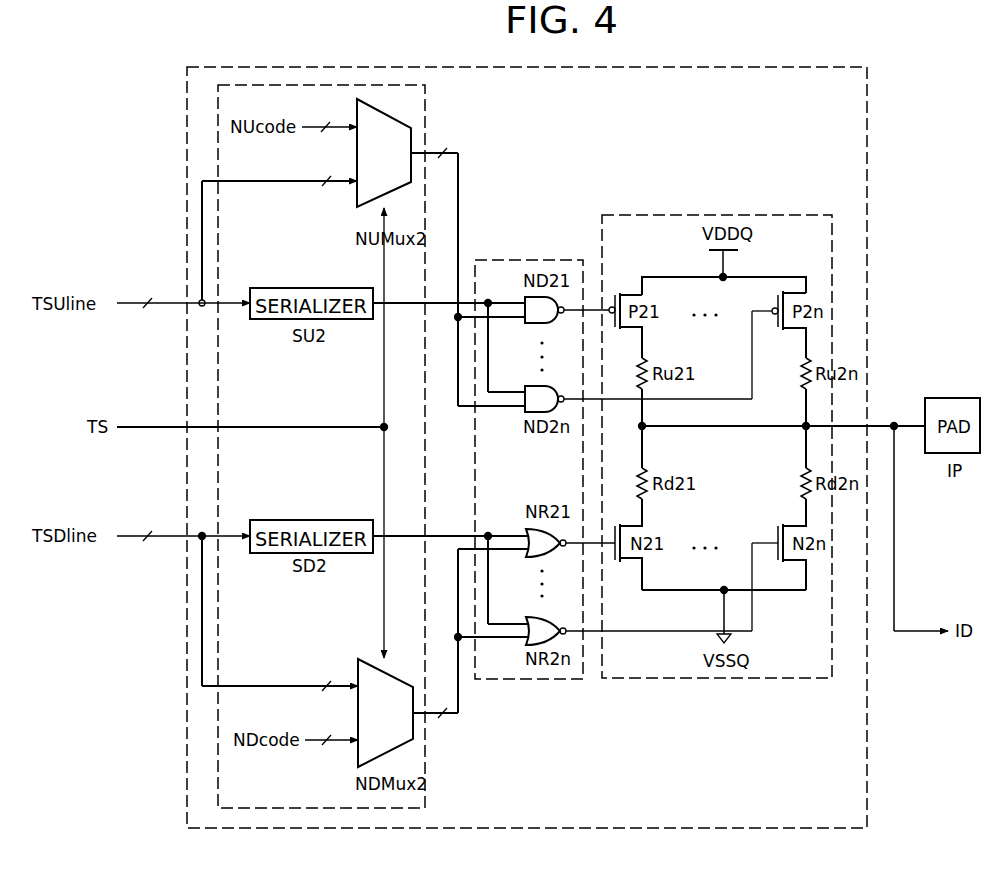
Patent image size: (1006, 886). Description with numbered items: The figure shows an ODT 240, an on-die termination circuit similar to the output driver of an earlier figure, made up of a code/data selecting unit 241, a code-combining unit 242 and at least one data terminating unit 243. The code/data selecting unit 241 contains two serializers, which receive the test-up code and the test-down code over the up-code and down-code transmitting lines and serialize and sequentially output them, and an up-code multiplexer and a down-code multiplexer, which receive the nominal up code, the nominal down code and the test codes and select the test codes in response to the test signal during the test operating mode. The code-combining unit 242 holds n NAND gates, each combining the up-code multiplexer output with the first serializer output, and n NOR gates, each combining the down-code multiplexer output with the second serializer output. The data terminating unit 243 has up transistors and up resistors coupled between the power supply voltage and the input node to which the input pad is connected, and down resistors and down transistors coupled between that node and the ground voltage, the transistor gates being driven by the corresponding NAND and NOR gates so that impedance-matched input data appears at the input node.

The ODT 240 is at (867, 97).
The code/data selecting unit 241 is at (425, 109).
The code-combining unit 242 is at (565, 260).
The data terminating unit 243 is at (802, 215).